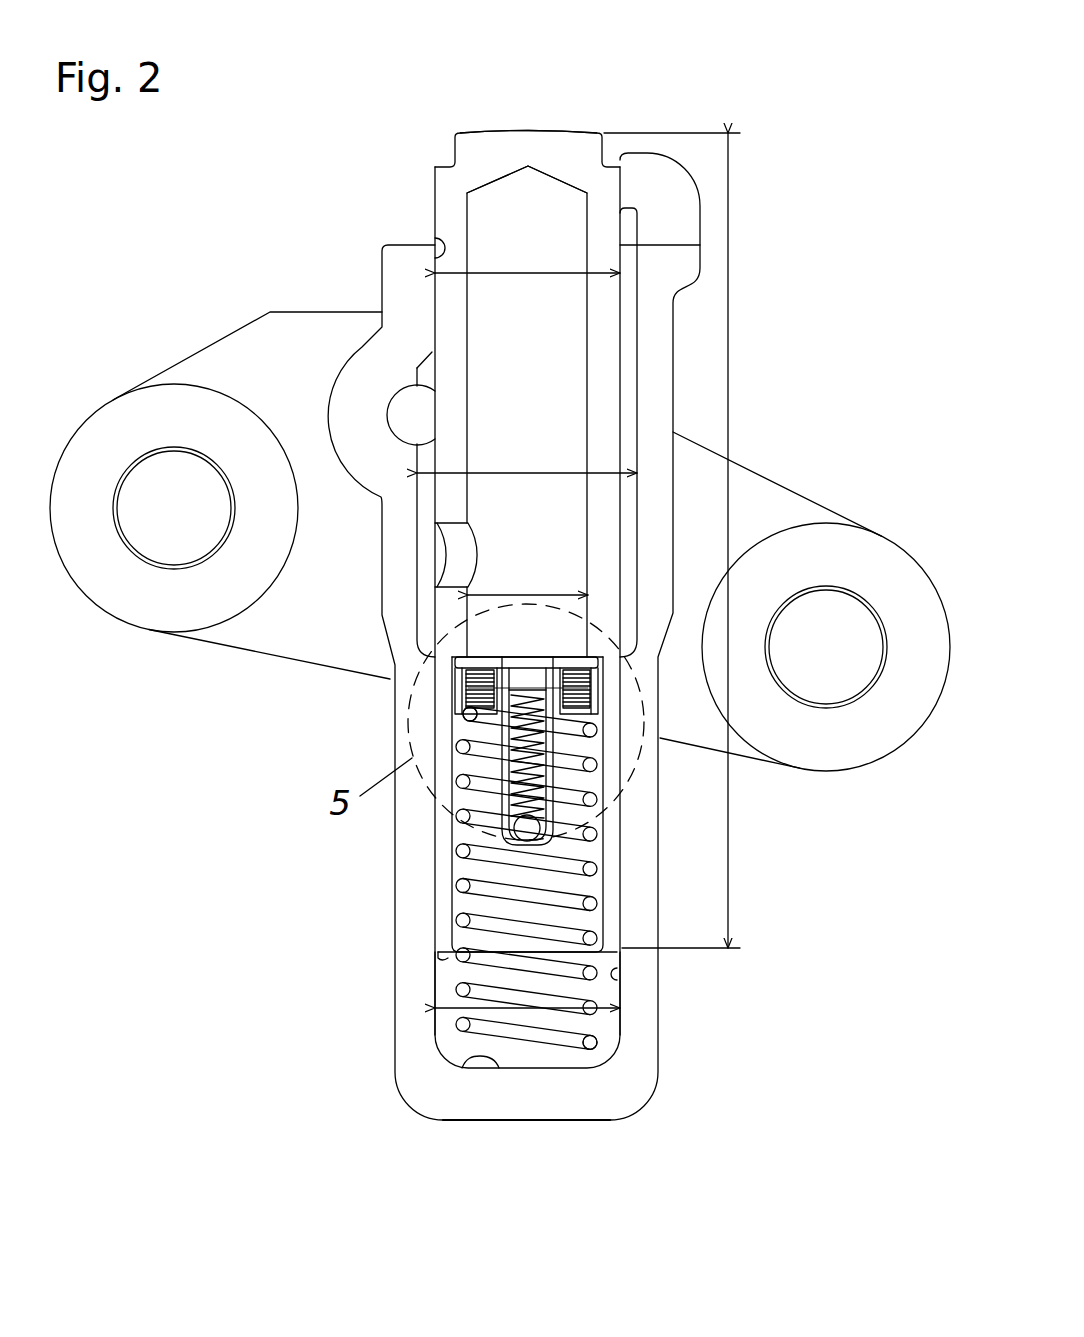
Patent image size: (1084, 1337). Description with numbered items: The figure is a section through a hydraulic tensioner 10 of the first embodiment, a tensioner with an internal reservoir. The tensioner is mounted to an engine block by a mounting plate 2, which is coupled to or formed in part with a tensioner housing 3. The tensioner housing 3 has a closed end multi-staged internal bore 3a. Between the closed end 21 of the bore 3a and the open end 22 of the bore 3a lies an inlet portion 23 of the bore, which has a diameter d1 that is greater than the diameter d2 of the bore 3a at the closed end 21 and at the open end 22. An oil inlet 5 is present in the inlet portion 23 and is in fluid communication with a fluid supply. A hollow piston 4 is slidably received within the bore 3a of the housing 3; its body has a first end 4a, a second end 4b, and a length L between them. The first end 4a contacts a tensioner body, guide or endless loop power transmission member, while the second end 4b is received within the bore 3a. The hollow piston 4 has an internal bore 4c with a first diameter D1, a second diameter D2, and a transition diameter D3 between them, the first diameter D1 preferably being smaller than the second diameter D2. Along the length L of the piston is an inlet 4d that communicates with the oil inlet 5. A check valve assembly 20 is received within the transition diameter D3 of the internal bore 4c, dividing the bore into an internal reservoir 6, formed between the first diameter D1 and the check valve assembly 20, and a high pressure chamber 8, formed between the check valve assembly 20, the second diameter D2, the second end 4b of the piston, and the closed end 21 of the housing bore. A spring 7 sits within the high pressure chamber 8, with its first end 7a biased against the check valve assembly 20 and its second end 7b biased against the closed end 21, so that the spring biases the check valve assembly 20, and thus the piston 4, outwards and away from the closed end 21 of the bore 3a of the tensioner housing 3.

The hydraulic tensioner 10 is at (111, 190).
The mounting plate 2 is at (243, 650).
The tensioner housing 3 is at (659, 1070).
The internal bore 3a is at (621, 977).
The hollow piston 4 is at (435, 218).
The first end 4a is at (531, 131).
The second end 4b is at (440, 958).
The internal bore 4c is at (587, 227).
The inlet 4d is at (453, 562).
The oil inlet 5 is at (408, 398).
The internal reservoir 6 is at (521, 355).
The spring 7 is at (461, 885).
The first end 7a is at (468, 713).
The second end 7b is at (594, 1045).
The high pressure chamber 8 is at (448, 1045).
The check valve assembly 20 is at (412, 738).
The closed end 21 is at (462, 1068).
The open end 22 is at (437, 248).
The inlet portion 23 is at (637, 385).
The diameter d1 is at (510, 473).
The diameter d2 is at (520, 273).
The first diameter D1 is at (498, 595).
The second diameter D2 is at (530, 908).
The transition diameter D3 is at (527, 688).
The length L is at (672, 540).